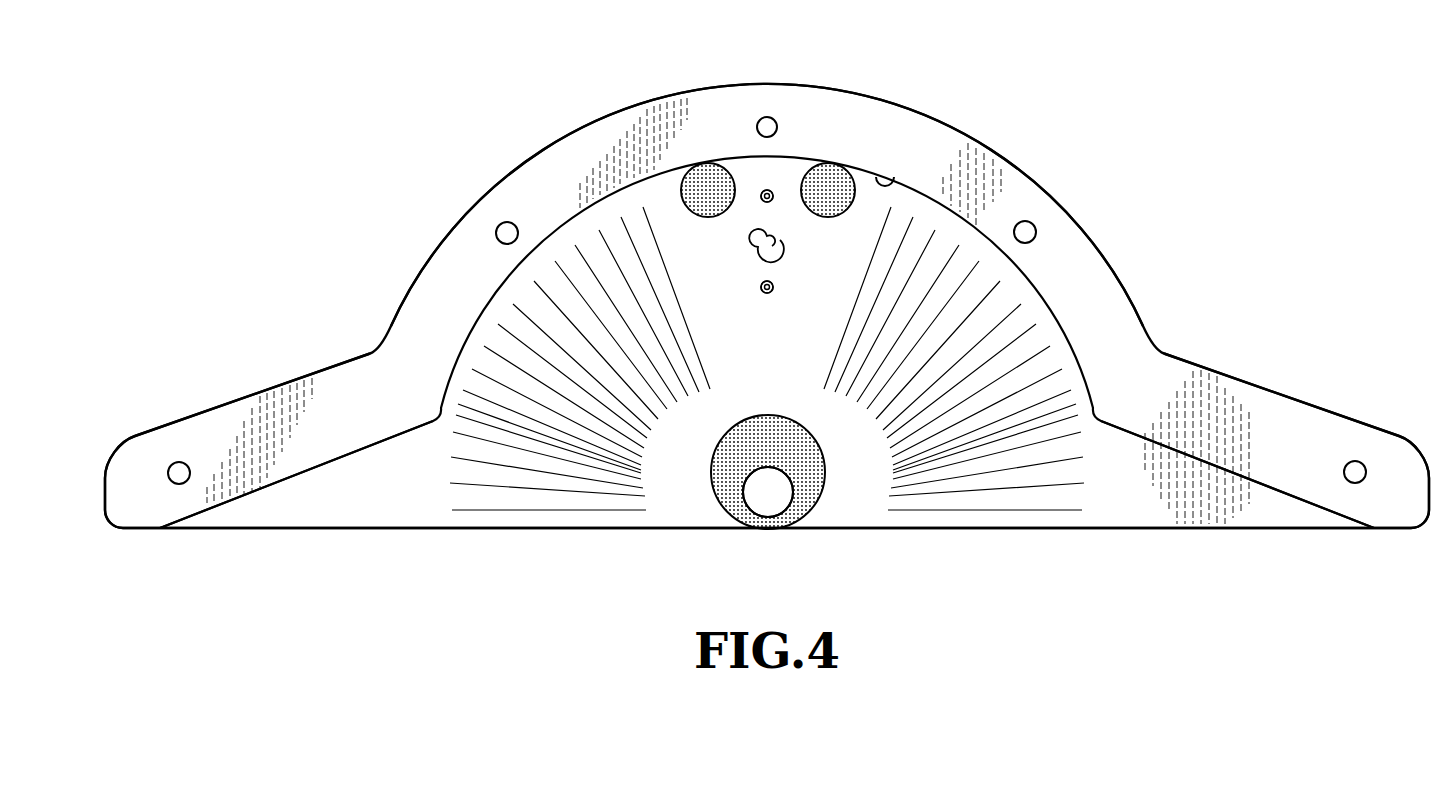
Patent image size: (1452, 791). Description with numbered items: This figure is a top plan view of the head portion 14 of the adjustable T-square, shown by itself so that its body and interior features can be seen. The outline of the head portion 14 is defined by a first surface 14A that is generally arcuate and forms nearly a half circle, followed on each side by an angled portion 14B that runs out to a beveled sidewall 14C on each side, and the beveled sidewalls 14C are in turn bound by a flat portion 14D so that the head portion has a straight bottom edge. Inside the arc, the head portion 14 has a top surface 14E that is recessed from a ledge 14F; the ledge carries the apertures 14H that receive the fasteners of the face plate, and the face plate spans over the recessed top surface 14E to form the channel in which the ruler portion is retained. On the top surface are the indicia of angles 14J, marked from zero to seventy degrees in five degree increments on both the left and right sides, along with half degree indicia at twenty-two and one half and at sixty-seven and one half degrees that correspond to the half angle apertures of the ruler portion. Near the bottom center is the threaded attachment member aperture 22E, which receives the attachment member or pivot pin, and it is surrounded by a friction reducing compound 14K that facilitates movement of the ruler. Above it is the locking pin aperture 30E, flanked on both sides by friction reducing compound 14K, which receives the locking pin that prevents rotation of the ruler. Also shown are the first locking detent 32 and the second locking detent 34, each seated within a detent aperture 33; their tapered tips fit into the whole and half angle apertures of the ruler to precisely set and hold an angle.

The head portion 14 is at (1046, 102).
The first surface 14A is at (567, 124).
The angled portion 14B is at (232, 402).
The beveled sidewall 14C is at (105, 496).
The flat portion 14D is at (410, 530).
The top surface 14E is at (790, 397).
The ledge 14F is at (903, 184).
The apertures 14H is at (762, 118).
The indicia of angles 14J is at (513, 348).
The friction reducing compound 14K is at (705, 186).
The attachment member aperture 22E is at (757, 507).
The locking pin aperture 30E is at (745, 228).
The first locking detent 32 is at (784, 207).
The detent aperture 33 is at (767, 241).
The second locking detent 34 is at (759, 296).